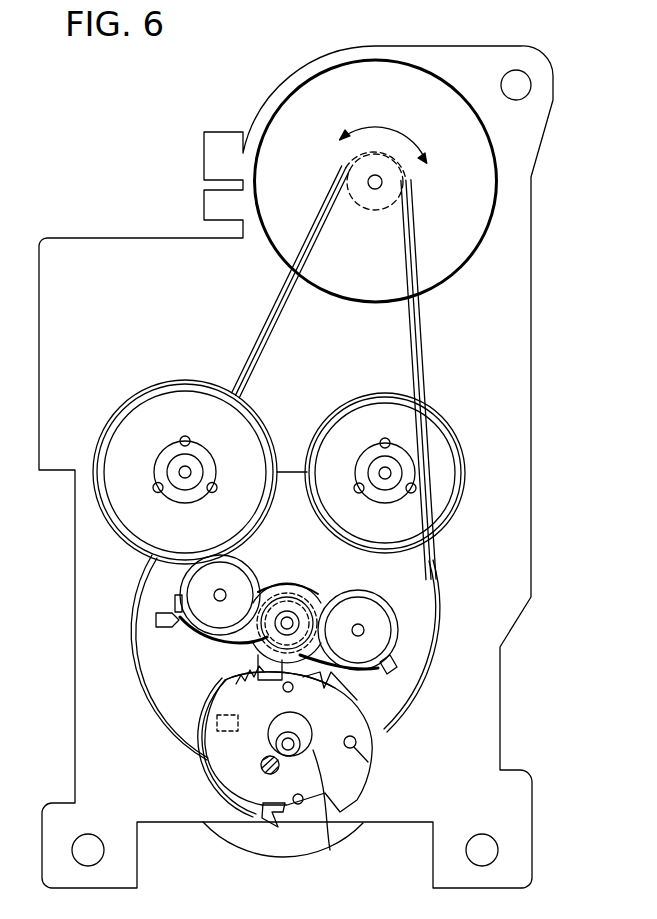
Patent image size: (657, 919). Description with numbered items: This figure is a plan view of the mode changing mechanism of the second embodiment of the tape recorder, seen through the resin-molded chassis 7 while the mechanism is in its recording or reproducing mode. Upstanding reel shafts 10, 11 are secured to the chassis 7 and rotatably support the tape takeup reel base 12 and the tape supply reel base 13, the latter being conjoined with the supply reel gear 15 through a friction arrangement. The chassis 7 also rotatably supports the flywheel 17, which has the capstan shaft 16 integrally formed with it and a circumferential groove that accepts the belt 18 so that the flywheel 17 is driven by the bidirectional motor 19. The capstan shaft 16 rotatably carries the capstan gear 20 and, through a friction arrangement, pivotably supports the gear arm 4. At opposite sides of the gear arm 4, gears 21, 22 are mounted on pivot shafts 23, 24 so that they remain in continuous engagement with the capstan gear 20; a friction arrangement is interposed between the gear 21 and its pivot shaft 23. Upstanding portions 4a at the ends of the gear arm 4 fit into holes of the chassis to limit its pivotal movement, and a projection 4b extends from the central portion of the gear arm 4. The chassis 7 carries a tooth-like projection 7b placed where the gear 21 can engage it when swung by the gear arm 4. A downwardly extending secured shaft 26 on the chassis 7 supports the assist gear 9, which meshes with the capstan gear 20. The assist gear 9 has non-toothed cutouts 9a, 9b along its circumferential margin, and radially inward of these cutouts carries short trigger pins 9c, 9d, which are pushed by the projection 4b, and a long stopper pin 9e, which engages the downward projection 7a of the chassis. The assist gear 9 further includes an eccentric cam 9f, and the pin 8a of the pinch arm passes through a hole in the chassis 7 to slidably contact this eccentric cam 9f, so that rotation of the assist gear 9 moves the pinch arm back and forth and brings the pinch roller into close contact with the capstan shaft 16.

The chassis 7 is at (531, 287).
The bidirectional motor 19 is at (493, 177).
The belt 18 is at (420, 320).
The reel shaft 10 is at (142, 462).
The tape takeup reel base 12 is at (162, 462).
The reel shaft 11 is at (433, 468).
The tape supply reel base 13 is at (414, 470).
The supply reel gear 15 is at (468, 475).
The gear 21 is at (183, 625).
The pivot shaft 23 is at (216, 601).
The capstan shaft 16 is at (287, 612).
The gear arm 4 is at (281, 646).
The upstanding portion 4a is at (176, 602).
The projection 4b is at (238, 690).
The projection 7b is at (154, 620).
The flywheel 17 is at (143, 648).
The capstan gear 20 is at (318, 595).
The gear 22 is at (400, 625).
The pivot shaft 24 is at (365, 627).
The assist gear 9 is at (312, 780).
The non-toothed cutout 9a is at (355, 695).
The short trigger pin 9c is at (345, 705).
The long stopper pin 9e is at (370, 762).
The short trigger pin 9d is at (300, 805).
The non-toothed cutout 9b is at (292, 813).
The eccentric cam 9f is at (311, 793).
The secured shaft 26 is at (280, 748).
The pin 8a is at (266, 774).
The downward projection 7a is at (220, 735).